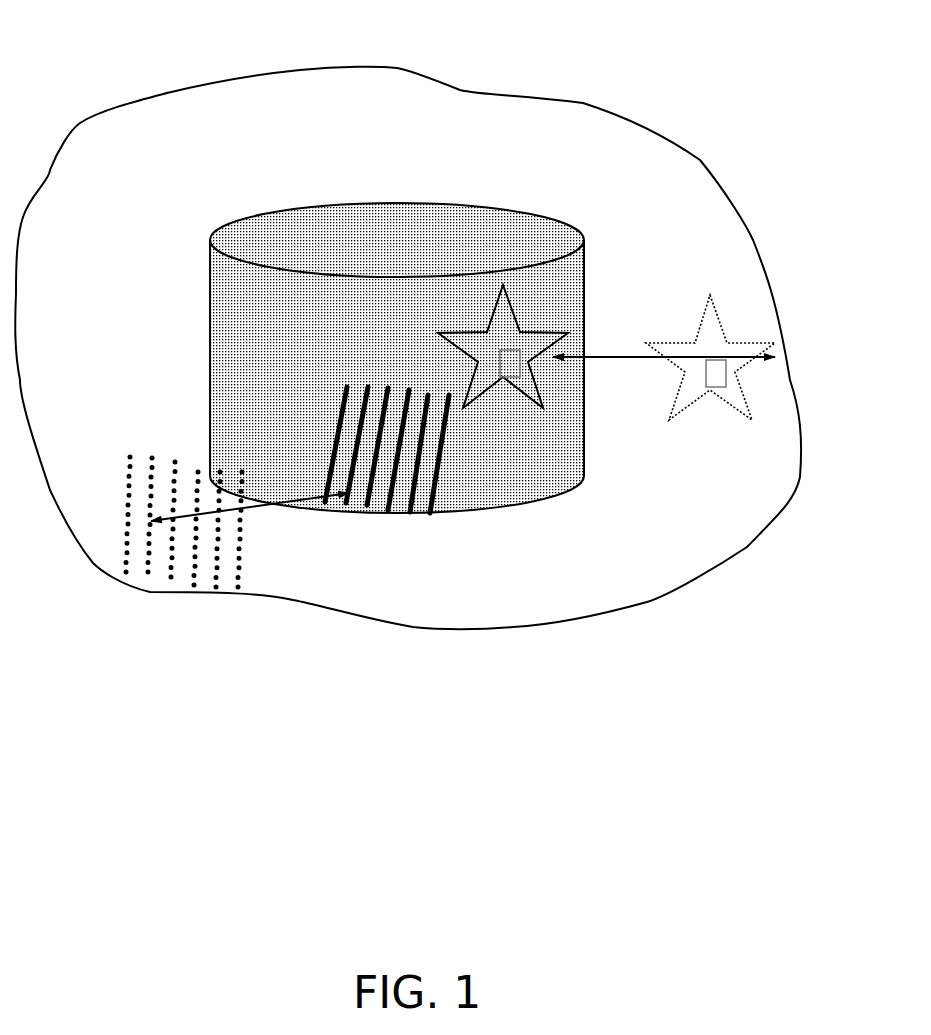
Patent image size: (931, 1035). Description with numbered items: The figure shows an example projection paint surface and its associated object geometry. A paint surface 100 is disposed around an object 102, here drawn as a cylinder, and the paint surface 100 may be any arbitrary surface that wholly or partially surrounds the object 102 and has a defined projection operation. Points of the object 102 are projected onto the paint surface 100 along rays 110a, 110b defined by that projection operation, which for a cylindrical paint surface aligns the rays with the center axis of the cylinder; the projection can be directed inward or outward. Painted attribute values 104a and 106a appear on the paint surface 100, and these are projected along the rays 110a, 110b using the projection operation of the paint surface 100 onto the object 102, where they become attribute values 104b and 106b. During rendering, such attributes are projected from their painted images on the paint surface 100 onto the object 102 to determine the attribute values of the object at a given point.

The paint surface 100 is at (399, 60).
The object 102 is at (594, 295).
The attribute value 104a is at (168, 577).
The attribute value 104b is at (443, 518).
The attribute value 106a is at (736, 341).
The attribute value 106b is at (533, 378).
The ray 110a is at (301, 502).
The ray 110b is at (785, 355).